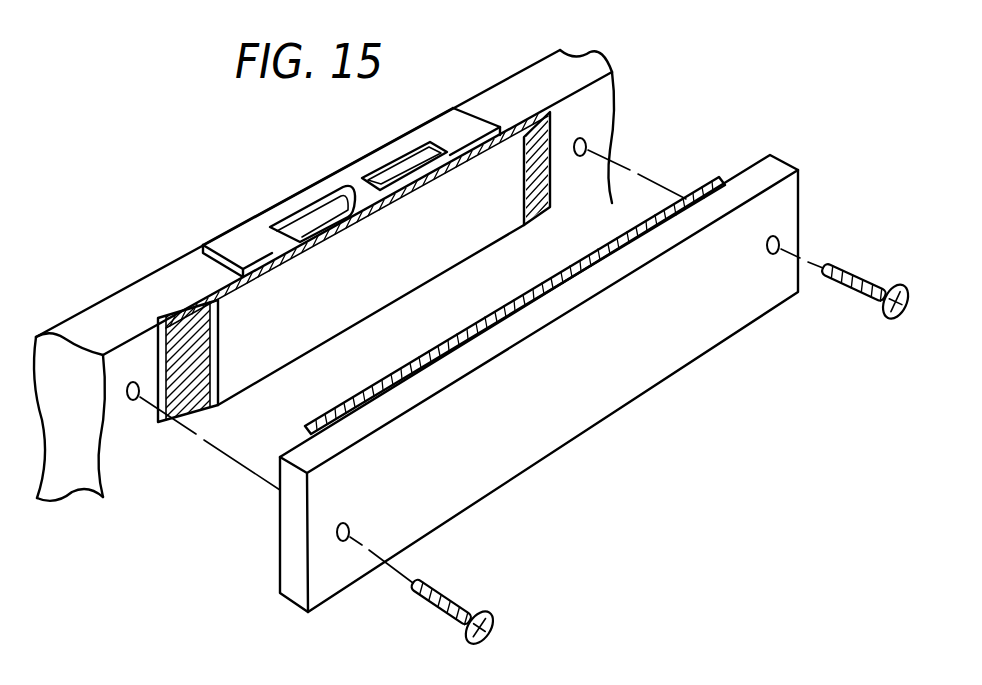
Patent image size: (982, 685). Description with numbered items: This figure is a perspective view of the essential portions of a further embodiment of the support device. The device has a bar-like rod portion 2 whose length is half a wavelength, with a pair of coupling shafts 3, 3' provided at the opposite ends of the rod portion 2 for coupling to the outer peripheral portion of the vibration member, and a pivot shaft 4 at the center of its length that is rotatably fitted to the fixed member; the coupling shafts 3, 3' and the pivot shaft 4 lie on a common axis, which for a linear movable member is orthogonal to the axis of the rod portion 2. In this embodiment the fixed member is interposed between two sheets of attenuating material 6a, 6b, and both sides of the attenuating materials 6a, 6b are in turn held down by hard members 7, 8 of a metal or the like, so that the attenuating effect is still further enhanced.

The rod portion 2 is at (300, 200).
The coupling shaft 3 is at (228, 231).
The coupling shaft 3' is at (423, 120).
The pivot shaft 4 is at (377, 187).
The attenuating material 6a is at (170, 426).
The attenuating material 6b is at (445, 349).
The hard member 7 is at (62, 373).
The hard member 8 is at (337, 580).